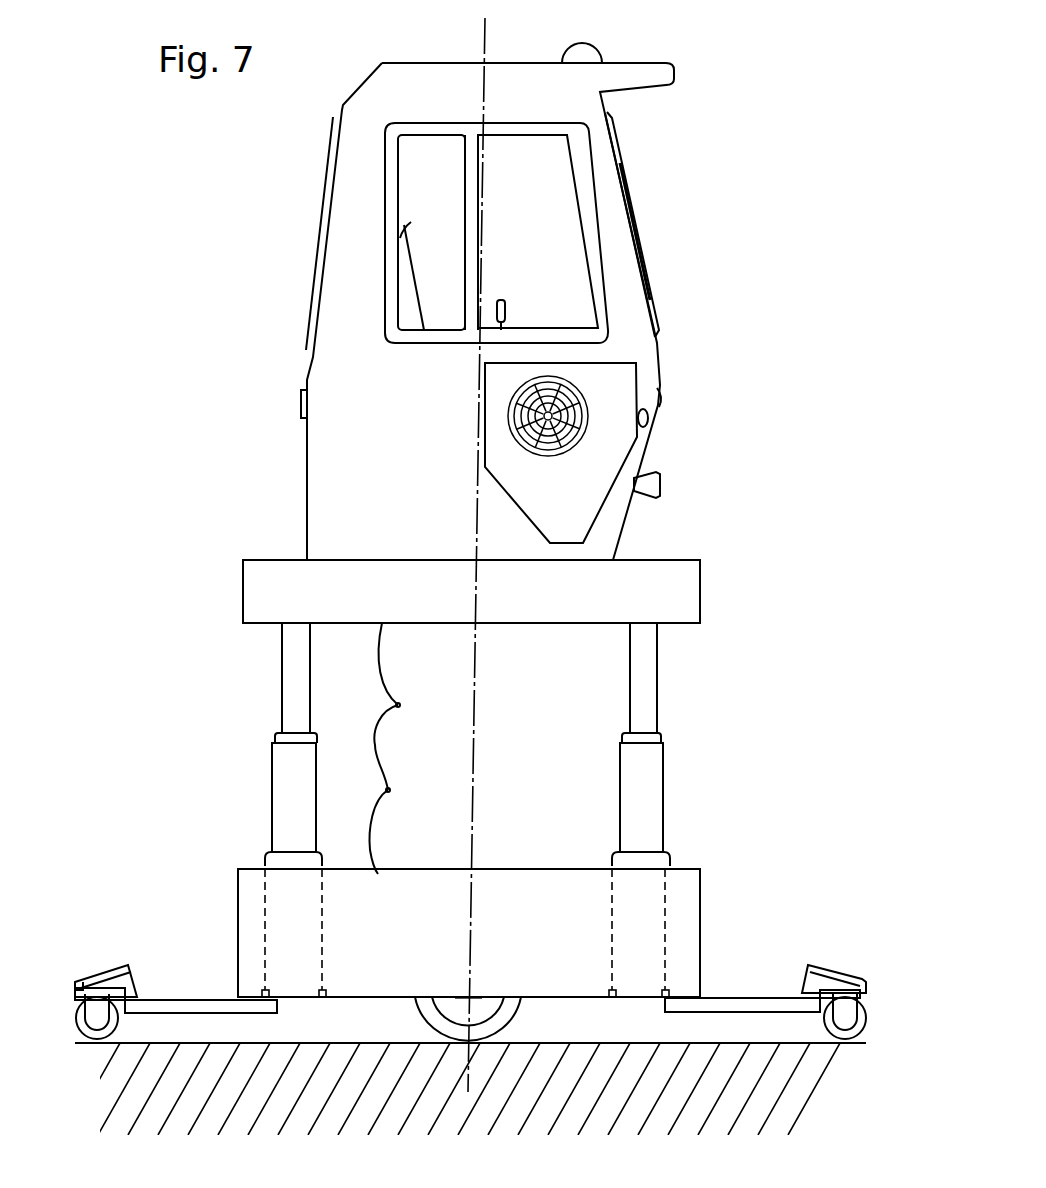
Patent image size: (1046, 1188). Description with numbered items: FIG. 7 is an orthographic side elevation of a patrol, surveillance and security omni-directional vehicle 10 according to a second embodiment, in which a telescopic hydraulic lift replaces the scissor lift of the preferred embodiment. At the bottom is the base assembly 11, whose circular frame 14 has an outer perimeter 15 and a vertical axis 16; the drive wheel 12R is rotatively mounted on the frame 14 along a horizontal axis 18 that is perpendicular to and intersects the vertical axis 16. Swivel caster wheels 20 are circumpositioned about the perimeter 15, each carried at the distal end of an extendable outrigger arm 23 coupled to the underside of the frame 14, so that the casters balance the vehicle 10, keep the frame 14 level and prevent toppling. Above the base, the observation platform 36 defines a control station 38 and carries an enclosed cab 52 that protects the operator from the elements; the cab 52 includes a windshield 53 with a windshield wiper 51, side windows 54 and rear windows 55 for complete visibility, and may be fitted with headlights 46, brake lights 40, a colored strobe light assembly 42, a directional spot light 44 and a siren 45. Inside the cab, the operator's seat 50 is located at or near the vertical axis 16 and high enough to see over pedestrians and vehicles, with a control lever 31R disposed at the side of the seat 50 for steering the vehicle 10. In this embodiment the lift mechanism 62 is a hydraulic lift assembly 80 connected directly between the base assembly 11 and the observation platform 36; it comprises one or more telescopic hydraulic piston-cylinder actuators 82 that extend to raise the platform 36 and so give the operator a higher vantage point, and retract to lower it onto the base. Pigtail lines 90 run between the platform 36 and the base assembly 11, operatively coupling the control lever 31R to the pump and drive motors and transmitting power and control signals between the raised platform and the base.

The omni-directional vehicle 10 is at (178, 378).
The base assembly 11 is at (702, 884).
The drive wheel 12R is at (522, 1015).
The frame 14 is at (702, 906).
The outer perimeter 15 is at (238, 890).
The vertical axis 16 is at (474, 886).
The horizontal axis 18 is at (472, 994).
The swivel caster wheel 20 is at (76, 1012).
The extendable outrigger arm 23 is at (173, 997).
The control lever 31R is at (503, 313).
The observation platform 36 is at (702, 590).
The control station 38 is at (550, 236).
The brake lights 40 is at (300, 406).
The colored strobe light assembly 42 is at (598, 62).
The directional spot light 44 is at (648, 422).
The siren 45 is at (661, 485).
The headlights 46 is at (662, 397).
The seat 50 is at (405, 235).
The windshield wiper 51 is at (647, 260).
The enclosed cab 52 is at (302, 462).
The windshield 53 is at (618, 152).
The side windows 54 is at (515, 137).
The rear windows 55 is at (323, 206).
The lift mechanism 62 is at (665, 755).
The hydraulic lift assembly 80 is at (272, 788).
The telescopic hydraulic piston-cylinder actuator 82 is at (282, 695).
The pigtail lines 90 is at (373, 762).